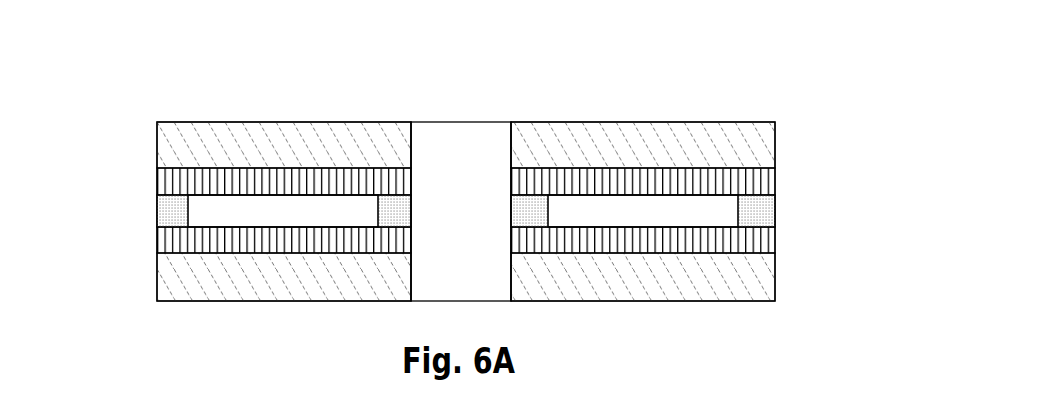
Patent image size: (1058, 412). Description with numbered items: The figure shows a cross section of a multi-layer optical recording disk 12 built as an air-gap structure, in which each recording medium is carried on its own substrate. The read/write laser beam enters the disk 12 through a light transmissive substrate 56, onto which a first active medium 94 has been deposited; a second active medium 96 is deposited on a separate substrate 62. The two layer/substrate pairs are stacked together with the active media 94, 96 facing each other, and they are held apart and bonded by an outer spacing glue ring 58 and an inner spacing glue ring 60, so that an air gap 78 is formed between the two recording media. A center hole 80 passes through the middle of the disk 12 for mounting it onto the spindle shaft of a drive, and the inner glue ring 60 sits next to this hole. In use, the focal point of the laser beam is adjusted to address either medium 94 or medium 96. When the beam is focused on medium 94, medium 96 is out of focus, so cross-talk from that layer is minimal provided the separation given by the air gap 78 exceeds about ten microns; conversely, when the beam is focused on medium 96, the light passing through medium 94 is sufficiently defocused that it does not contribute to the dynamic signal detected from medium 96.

The disk 12 is at (661, 79).
The transmissive substrate 56 is at (165, 277).
The outer spacing glue ring 58 is at (165, 215).
The inner spacing glue ring 60 is at (531, 216).
The substrate 62 is at (165, 145).
The air gap 78 is at (463, 212).
The center hole 80 is at (476, 143).
The active medium 94 is at (768, 238).
The active medium 96 is at (768, 178).